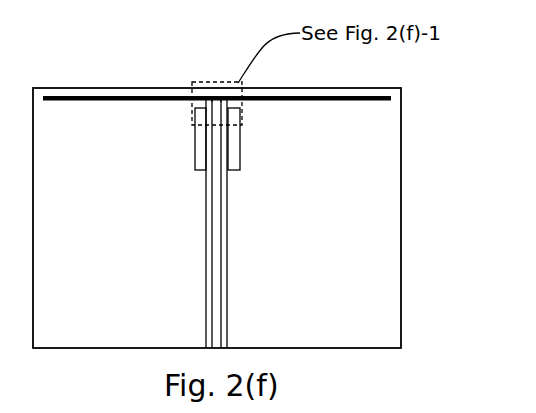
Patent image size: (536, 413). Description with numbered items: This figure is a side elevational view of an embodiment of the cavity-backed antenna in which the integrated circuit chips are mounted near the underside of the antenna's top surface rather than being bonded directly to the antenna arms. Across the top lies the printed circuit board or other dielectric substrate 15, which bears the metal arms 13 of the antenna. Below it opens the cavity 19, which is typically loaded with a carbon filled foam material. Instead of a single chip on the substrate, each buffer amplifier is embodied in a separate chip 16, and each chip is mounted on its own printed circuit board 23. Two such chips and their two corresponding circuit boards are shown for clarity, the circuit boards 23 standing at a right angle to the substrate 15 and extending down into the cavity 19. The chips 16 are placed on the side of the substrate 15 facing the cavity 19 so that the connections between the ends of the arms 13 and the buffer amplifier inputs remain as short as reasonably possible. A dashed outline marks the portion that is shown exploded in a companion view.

The arms 13 is at (85, 97).
The printed circuit board or other dielectric substrate 15 is at (148, 96).
The integrated circuit chip 16 is at (221, 139).
The cavity 19 is at (361, 278).
The printed circuit board 23 is at (219, 223).